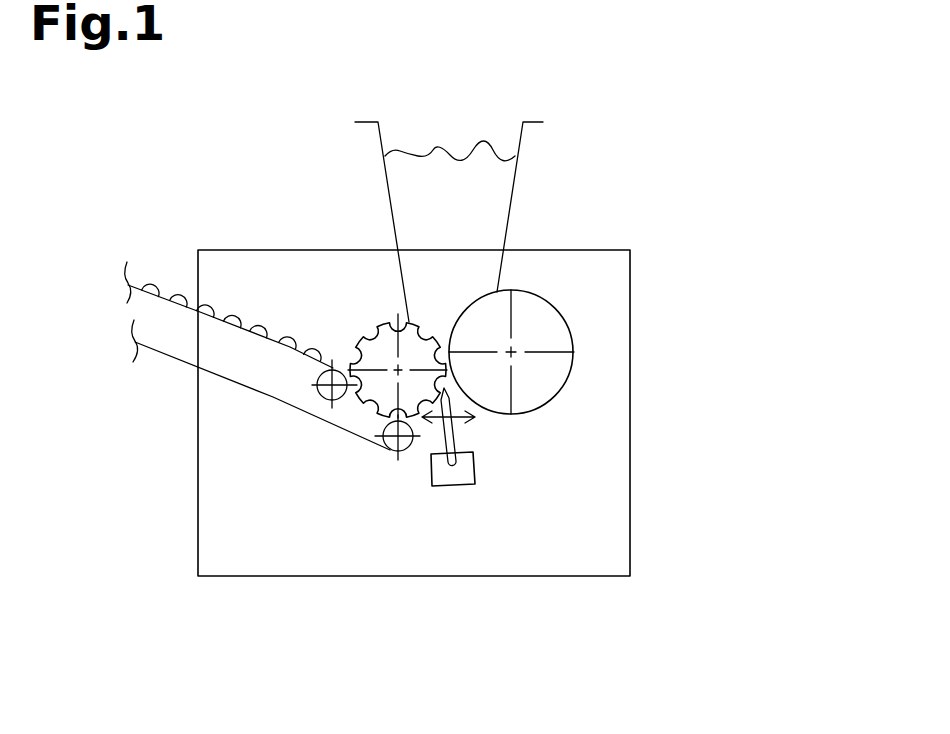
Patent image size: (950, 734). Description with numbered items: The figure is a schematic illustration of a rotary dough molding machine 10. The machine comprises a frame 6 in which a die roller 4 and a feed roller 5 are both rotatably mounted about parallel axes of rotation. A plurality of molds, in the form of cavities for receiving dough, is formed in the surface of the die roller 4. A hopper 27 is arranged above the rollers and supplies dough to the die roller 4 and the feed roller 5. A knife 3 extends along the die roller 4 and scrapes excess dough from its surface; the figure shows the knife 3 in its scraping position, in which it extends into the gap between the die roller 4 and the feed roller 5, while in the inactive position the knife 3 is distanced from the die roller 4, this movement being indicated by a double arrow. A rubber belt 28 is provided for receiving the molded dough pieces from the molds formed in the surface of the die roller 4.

The rotary dough molding machine 10 is at (700, 116).
The hopper 27 is at (512, 197).
The feed roller 5 is at (573, 370).
The knife 3 is at (460, 427).
The die roller 4 is at (343, 397).
The belt 28 is at (247, 390).
The frame 6 is at (630, 516).